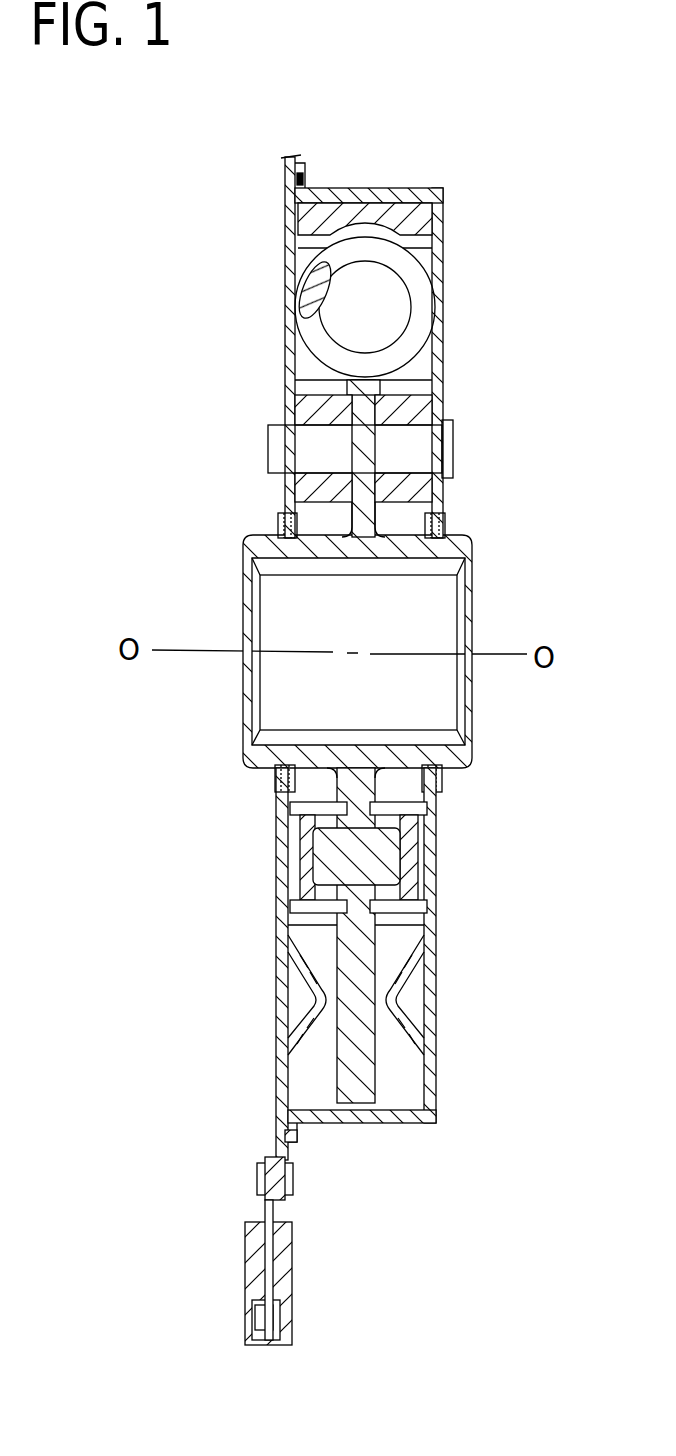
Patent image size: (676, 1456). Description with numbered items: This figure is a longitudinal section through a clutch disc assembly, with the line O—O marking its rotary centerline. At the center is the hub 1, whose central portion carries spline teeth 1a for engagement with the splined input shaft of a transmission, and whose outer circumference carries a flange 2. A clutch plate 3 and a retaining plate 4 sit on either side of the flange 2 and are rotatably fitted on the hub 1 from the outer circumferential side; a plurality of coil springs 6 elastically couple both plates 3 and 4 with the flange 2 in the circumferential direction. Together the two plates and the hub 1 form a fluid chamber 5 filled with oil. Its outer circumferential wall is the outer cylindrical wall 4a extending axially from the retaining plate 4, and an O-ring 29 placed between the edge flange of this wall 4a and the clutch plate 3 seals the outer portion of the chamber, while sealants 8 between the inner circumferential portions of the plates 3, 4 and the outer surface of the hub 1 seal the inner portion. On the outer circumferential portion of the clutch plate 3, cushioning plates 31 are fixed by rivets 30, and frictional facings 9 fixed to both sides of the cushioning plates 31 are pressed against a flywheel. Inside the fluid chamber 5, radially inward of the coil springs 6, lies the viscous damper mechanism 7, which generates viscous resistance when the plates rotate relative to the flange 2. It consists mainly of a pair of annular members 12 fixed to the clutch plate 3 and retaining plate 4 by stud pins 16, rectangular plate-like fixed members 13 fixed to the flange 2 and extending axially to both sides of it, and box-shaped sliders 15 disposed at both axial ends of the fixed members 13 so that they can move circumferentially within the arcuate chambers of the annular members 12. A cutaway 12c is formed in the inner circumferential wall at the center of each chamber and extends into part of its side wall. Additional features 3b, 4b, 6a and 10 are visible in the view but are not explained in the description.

The hub 1 is at (450, 548).
The spline teeth 1a is at (385, 568).
The flange 2 is at (360, 1058).
The clutch plate 3 is at (293, 312).
The left diaphragm spring 3b is at (305, 983).
The retaining plate 4 is at (440, 303).
The outer cylindrical wall 4a is at (362, 198).
The right diaphragm spring 4b is at (393, 982).
The fluid chamber 5 is at (405, 519).
The coil springs 6 is at (400, 268).
The seal 6a is at (313, 240).
The viscous damper mechanism 7 is at (218, 871).
The sealants 8 is at (282, 525).
The frictional facings 9 is at (278, 1265).
The bearing holder 10 is at (398, 198).
The annular members 12 is at (313, 403).
The cutaway 12c is at (297, 825).
The fixed members 13 is at (376, 862).
The sliders 15 is at (303, 875).
The stud pins 16 is at (315, 445).
The O-ring 29 is at (295, 1138).
The rivets 30 is at (293, 1187).
The cushioning plates 31 is at (265, 1207).